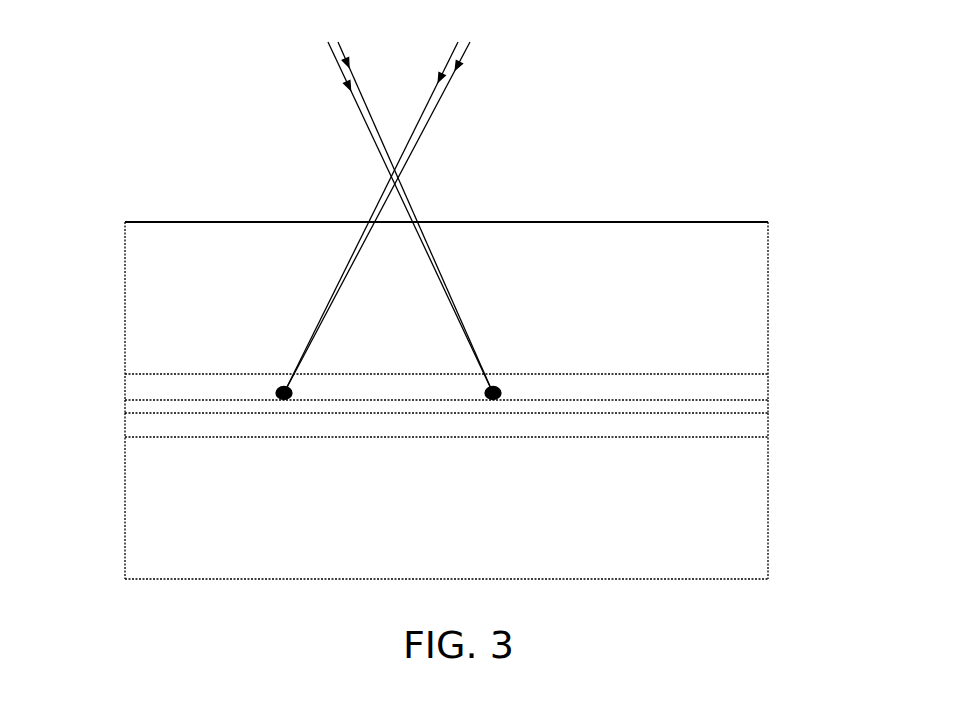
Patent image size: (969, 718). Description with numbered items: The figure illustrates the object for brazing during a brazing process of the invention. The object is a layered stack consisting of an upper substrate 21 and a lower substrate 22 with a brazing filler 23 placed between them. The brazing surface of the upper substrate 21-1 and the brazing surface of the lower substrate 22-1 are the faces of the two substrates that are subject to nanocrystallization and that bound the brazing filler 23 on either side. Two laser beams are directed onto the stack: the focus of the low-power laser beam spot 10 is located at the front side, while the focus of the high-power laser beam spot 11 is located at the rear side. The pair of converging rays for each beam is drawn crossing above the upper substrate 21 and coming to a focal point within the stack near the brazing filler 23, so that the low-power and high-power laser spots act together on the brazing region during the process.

The focus of the low-power laser beam spot 10 is at (284, 393).
The focus of the high-power laser beam spot 11 is at (493, 393).
The upper substrate 21 is at (125, 315).
The brazing surface of the upper substrate 21-1 is at (647, 390).
The lower substrate 22 is at (125, 513).
The brazing surface of the lower substrate 22-1 is at (608, 425).
The brazing filler 23 is at (175, 408).